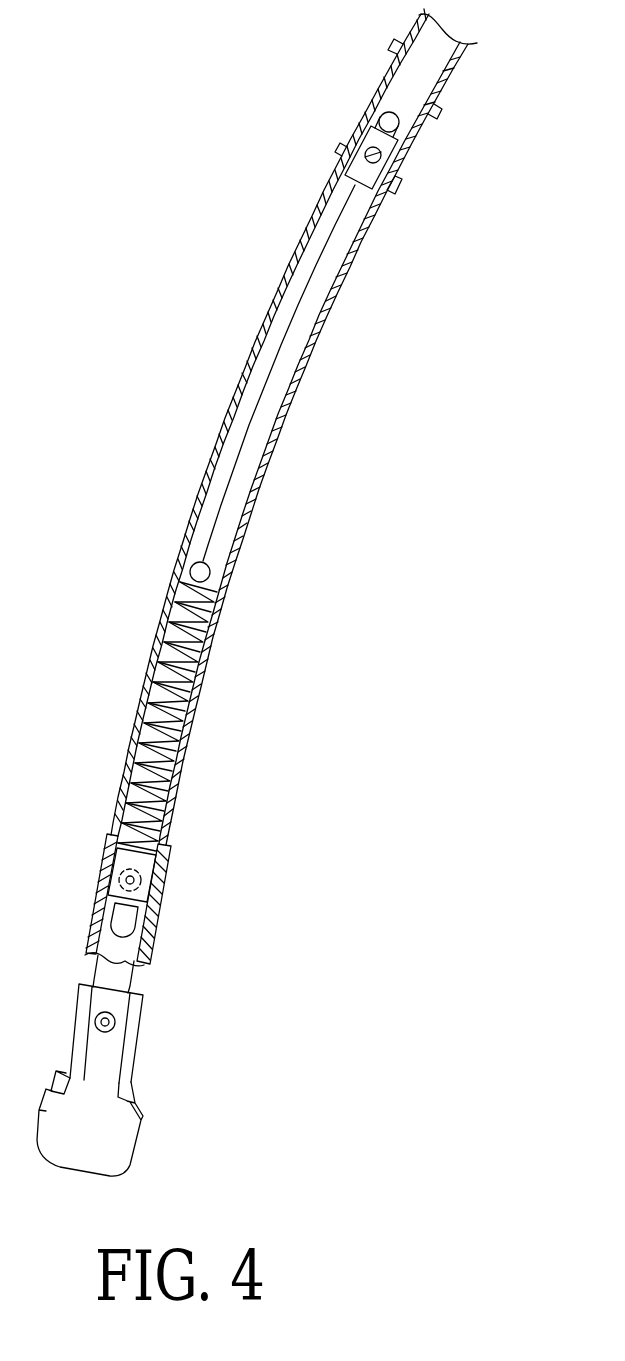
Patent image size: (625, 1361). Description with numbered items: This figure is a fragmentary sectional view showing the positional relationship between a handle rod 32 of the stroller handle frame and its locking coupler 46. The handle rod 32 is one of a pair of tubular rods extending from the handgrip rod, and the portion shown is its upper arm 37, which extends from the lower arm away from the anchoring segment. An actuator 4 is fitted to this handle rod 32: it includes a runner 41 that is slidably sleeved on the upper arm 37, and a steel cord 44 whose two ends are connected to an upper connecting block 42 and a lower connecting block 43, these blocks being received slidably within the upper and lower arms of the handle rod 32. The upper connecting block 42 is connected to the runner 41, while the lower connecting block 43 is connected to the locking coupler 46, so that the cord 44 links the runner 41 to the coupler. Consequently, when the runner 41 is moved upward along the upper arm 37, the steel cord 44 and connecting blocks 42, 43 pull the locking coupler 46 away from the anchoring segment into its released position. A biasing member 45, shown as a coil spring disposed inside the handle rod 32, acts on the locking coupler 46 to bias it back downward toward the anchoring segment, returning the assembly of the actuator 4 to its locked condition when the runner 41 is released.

The actuator 4 is at (246, 446).
The handle rod 32 is at (248, 517).
The upper arm 37 is at (361, 243).
The runner 41 is at (402, 172).
The upper connecting block 42 is at (344, 160).
The lower connecting block 43 is at (145, 863).
The steel cord 44 is at (298, 315).
The biasing member 45 is at (200, 683).
The locking coupler 46 is at (165, 921).